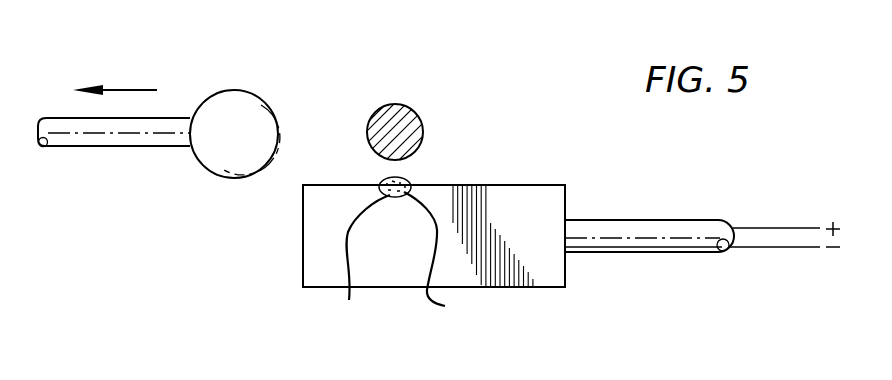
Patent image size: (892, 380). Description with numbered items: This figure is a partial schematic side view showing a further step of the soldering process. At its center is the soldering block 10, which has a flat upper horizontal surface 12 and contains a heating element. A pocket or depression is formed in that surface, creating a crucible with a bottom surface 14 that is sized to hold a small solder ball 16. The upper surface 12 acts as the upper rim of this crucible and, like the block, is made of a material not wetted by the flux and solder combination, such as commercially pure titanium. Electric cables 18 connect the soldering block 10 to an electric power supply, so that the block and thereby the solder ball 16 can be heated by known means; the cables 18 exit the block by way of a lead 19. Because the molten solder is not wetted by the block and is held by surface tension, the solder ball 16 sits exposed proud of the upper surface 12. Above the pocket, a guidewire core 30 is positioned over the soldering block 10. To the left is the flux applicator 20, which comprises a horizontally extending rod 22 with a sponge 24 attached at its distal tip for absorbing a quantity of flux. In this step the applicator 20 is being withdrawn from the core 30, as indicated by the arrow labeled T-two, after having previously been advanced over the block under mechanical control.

The soldering block 10 is at (498, 197).
The flat upper horizontal surface 12 is at (452, 185).
The bottom surface of the crucible pocket 14 is at (445, 306).
The solder ball 16 is at (362, 262).
The electric cables 18 is at (752, 228).
The cable 19 is at (628, 220).
The flux applicator 20 is at (186, 60).
The horizontally extending rod 22 is at (108, 147).
The sponge 24 is at (234, 90).
The guidewire core 30 is at (400, 104).